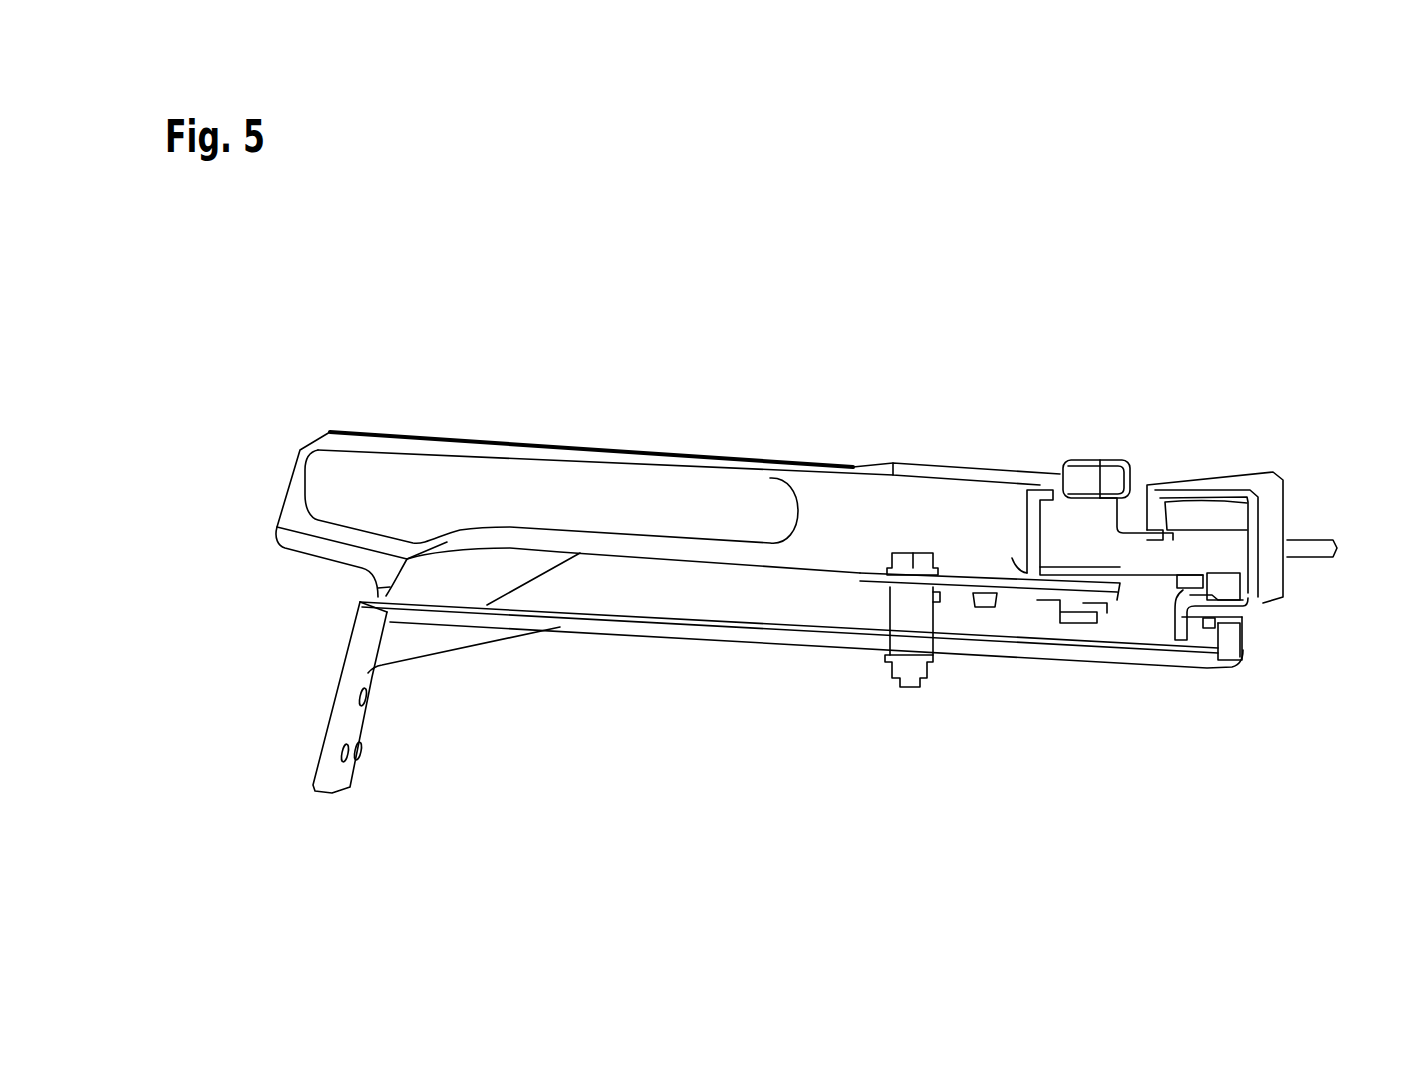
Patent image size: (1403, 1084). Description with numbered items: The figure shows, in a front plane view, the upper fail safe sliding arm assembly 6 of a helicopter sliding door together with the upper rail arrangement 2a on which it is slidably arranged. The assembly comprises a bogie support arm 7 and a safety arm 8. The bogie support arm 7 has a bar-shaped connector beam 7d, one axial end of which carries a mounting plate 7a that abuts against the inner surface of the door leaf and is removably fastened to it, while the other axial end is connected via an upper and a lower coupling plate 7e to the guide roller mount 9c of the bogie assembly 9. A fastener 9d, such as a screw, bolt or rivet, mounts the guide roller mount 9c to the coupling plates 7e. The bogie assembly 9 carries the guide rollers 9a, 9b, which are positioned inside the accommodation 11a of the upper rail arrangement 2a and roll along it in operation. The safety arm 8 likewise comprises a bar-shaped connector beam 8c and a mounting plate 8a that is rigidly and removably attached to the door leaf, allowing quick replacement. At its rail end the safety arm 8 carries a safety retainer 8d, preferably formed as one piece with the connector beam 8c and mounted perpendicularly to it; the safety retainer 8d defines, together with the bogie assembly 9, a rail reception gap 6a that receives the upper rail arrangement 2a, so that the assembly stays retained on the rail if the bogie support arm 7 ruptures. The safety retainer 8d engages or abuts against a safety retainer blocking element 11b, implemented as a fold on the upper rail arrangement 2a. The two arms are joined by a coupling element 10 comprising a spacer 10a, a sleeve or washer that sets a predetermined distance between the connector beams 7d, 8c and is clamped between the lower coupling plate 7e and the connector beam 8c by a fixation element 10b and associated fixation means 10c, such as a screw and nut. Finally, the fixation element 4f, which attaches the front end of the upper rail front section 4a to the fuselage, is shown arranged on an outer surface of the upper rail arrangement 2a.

The upper rail arrangement 2a is at (1158, 639).
The upper rail front section 4a is at (1245, 637).
The fixation element 4f is at (1268, 517).
The upper fail safe sliding arm assembly 6 is at (710, 430).
The rail reception gap 6a is at (1268, 611).
The bogie support arm 7 is at (437, 430).
The mounting plate 7a is at (402, 682).
The connector beam 7d is at (638, 480).
The coupling plate 7e is at (977, 477).
The safety arm 8 is at (738, 650).
The mounting plate 8a is at (360, 723).
The connector beam 8c is at (655, 630).
The safety retainer 8d is at (1225, 648).
The bogie assembly 9 is at (1152, 477).
The guide roller 9a is at (1170, 520).
The guide roller 9b is at (1217, 590).
The guide roller mount 9c is at (1042, 520).
The fastener 9d is at (1087, 477).
The coupling element 10 is at (912, 700).
The spacer 10a is at (917, 610).
The fixation element 10b is at (917, 553).
The fixation means 10c is at (888, 668).
The accommodation 11a is at (1185, 530).
The safety retainer blocking element 11b is at (1185, 622).